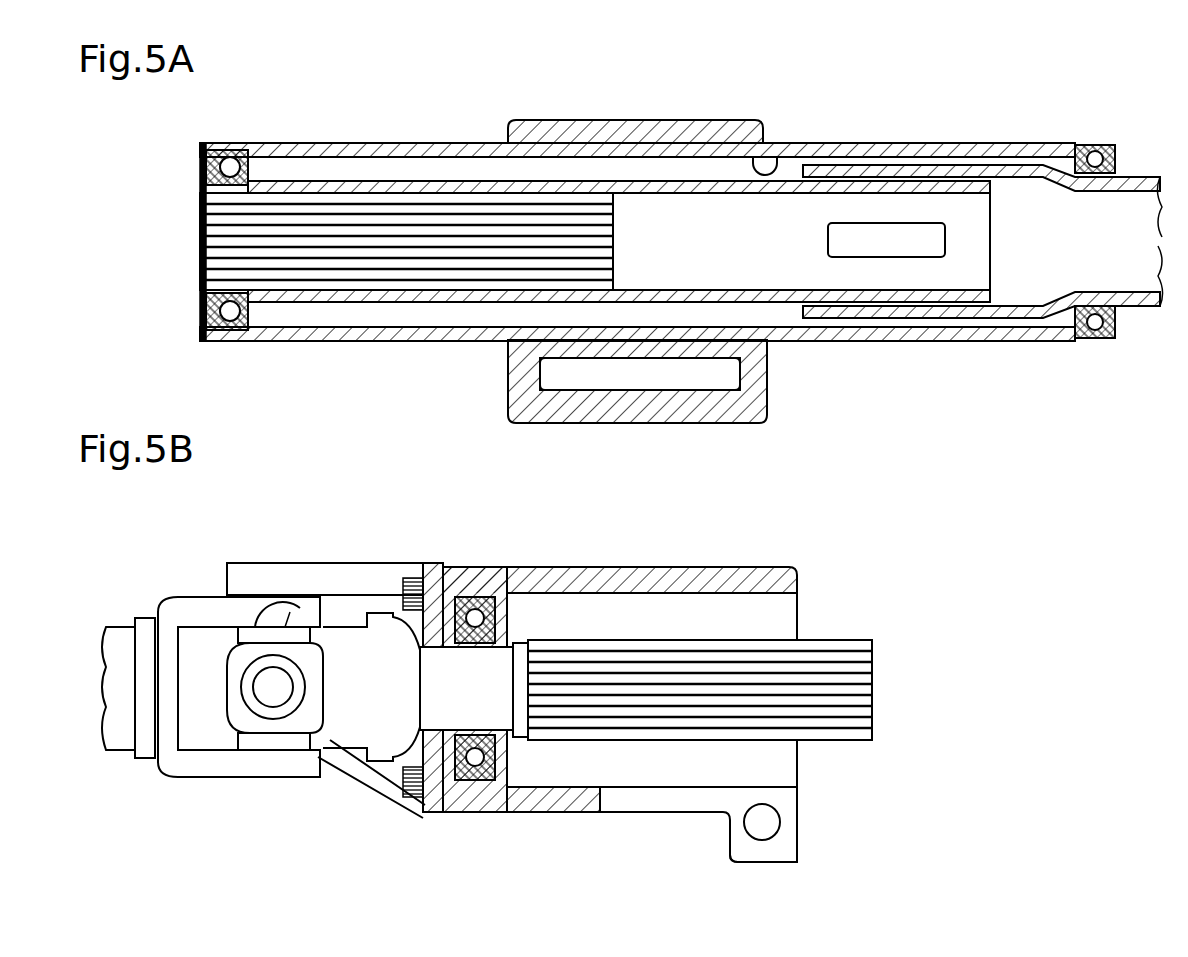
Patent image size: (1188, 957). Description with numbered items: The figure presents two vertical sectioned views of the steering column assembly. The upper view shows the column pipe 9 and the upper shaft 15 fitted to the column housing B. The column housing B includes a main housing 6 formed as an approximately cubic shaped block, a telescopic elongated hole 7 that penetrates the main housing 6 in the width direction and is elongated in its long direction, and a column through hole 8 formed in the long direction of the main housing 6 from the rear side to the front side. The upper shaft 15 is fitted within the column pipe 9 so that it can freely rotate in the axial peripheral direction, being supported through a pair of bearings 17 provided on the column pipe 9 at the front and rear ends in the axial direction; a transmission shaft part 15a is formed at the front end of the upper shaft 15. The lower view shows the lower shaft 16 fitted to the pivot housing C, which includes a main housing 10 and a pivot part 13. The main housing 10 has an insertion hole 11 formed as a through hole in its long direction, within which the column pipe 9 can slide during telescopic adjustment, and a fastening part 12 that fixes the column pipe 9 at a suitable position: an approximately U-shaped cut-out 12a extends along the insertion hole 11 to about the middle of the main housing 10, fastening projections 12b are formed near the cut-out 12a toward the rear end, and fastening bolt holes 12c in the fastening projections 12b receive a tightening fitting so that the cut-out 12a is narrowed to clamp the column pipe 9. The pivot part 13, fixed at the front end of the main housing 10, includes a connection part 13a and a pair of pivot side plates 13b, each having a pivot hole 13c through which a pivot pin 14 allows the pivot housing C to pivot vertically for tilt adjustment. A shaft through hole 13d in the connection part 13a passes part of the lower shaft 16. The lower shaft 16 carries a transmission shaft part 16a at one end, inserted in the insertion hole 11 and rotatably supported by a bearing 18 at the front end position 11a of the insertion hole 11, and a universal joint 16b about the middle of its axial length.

In FIG. 5A, the main housing 6 is at (510, 373).
In FIG. 5A, the telescopic elongated hole 7 is at (700, 372).
In FIG. 5A, the column through hole 8 is at (775, 156).
In FIG. 5A, the column pipe 9 is at (1003, 145).
In FIG. 5B, the main housing 10 is at (590, 567).
In FIG. 5B, the insertion hole 11 is at (774, 597).
In FIG. 5B, the front end position 11a is at (480, 768).
In FIG. 5B, the fastening part 12 is at (801, 861).
In FIG. 5B, the cut-out 12a is at (645, 795).
In FIG. 5B, the fastening projections 12b is at (770, 865).
In FIG. 5B, the fastening bolt holes 12c is at (766, 823).
In FIG. 5B, the pivot part 13 is at (343, 768).
In FIG. 5B, the connection part 13a is at (430, 563).
In FIG. 5B, the pivot side plates 13b is at (248, 580).
In FIG. 5B, the pivot holes 13c is at (288, 587).
In FIG. 5B, the shaft through hole 13d is at (430, 738).
In FIG. 5B, the pivot pin 14 is at (317, 590).
In FIG. 5A, the upper shaft 15 is at (465, 182).
In FIG. 5A, the transmission shaft part 15a is at (615, 217).
In FIG. 5B, the lower shaft 16 is at (122, 766).
In FIG. 5B, the transmission shaft part 16a is at (868, 742).
In FIG. 5B, the universal joint 16b is at (165, 780).
In FIG. 5A, the bearings 17 is at (250, 322).
In FIG. 5B, the bearing 18 is at (495, 753).
In FIG. 5A, the column housing B is at (742, 112).
In FIG. 5B, the pivot housing C is at (729, 567).